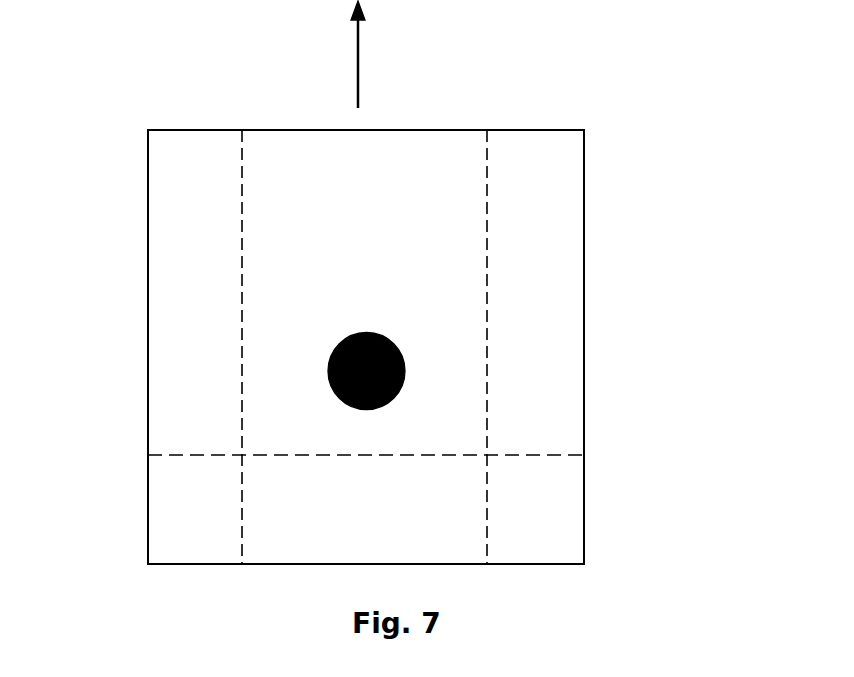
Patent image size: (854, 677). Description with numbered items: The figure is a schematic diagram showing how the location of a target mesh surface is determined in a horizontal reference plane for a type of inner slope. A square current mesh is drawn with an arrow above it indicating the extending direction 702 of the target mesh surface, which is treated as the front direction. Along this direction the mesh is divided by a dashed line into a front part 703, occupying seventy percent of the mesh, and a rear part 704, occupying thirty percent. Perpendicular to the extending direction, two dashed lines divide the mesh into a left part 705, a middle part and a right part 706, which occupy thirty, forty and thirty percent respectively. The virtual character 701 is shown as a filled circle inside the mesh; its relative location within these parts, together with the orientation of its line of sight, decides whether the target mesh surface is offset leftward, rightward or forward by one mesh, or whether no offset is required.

The virtual character 701 is at (330, 360).
The extending direction 702 is at (357, 80).
The front part 703 is at (409, 156).
The rear part 704 is at (445, 522).
The left part 705 is at (185, 270).
The right part 706 is at (532, 302).